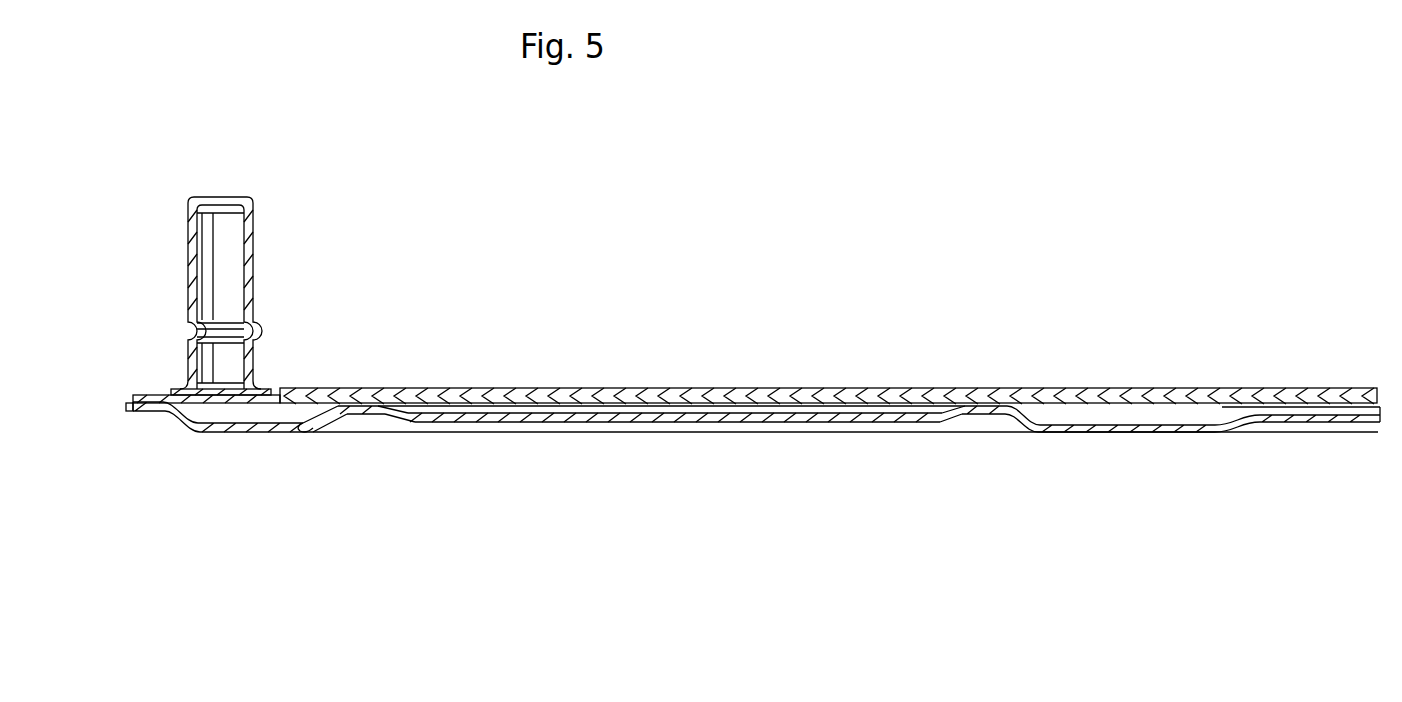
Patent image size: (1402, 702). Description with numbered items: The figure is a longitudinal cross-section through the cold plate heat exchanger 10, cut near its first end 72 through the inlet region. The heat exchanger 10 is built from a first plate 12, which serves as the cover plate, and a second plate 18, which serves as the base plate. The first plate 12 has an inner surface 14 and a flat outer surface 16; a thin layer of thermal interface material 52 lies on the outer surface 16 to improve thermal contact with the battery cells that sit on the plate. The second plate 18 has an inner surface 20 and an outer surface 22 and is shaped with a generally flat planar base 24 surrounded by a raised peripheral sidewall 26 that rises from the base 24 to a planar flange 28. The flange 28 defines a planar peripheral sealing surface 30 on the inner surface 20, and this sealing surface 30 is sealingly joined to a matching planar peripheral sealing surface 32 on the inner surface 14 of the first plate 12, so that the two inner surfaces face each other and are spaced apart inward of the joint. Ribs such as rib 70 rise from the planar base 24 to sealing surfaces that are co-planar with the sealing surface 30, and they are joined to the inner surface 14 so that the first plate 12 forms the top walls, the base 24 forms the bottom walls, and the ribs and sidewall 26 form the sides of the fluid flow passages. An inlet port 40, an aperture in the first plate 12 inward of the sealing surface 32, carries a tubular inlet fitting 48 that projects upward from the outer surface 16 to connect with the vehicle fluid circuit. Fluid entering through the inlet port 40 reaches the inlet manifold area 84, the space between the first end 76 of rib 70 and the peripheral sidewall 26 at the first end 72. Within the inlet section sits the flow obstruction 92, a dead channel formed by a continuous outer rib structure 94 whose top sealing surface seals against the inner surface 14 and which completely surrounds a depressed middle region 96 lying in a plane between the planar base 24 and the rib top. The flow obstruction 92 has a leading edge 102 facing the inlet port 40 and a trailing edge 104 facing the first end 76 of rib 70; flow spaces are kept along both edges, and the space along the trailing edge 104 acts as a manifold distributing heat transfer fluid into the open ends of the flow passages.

The heat exchanger 10 is at (515, 472).
The first plate 12 is at (1290, 398).
The inner surface of first plate 14 is at (1335, 405).
The outer surface of first plate 16 is at (1213, 397).
The second plate 18 is at (692, 471).
The inner surface of second plate 20 is at (1126, 354).
The outer surface of second plate 22 is at (706, 407).
The planar base 24 is at (1108, 420).
The raised peripheral sidewall 26 is at (178, 422).
The planar flange 28 is at (143, 412).
The planar peripheral sealing surface of second plate 30 is at (191, 352).
The planar peripheral sealing surface of first plate 32 is at (148, 392).
The inlet port 40 is at (220, 400).
The tubular inlet fitting 48 is at (255, 263).
The thermal interface material 52 is at (828, 339).
The rib 70 is at (1283, 413).
The first end of heat exchanger 72 is at (118, 412).
The first end of rib 76 is at (1220, 427).
The inlet manifold area 84 is at (590, 417).
The flow obstruction 92 is at (800, 422).
The continuous outer rib structure 94 is at (360, 408).
The depressed middle region 96 is at (462, 422).
The leading edge 102 is at (302, 430).
The trailing edge 104 is at (1038, 398).